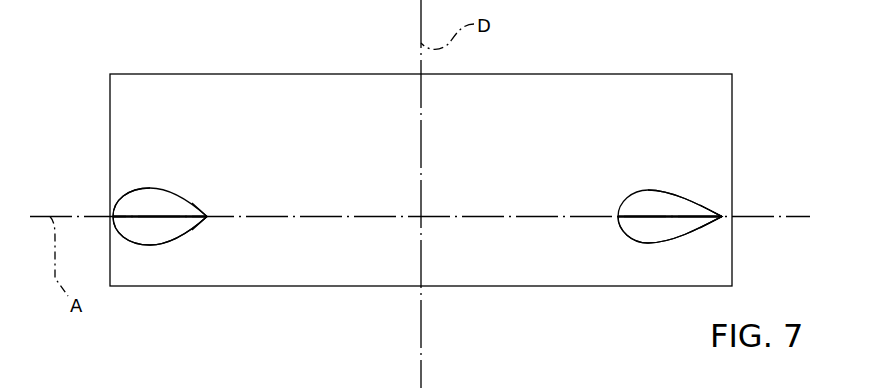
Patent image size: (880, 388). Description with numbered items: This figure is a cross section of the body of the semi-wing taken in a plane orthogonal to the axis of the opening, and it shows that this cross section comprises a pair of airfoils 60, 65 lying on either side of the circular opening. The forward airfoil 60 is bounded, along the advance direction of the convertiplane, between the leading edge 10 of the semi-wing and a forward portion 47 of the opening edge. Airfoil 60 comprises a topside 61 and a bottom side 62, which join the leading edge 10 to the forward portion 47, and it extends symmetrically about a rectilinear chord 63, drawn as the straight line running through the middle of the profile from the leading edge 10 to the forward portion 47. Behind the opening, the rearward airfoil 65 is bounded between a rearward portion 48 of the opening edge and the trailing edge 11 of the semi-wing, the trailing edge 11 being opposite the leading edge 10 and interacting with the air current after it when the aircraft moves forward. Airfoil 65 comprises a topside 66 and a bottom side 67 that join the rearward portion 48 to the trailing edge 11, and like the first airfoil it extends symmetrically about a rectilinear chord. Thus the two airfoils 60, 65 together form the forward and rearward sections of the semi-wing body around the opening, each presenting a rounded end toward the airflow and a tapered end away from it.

The leading edge 10 is at (113, 215).
The trailing edge 11 is at (723, 214).
The forward portion 47 is at (208, 217).
The rearward portion 48 is at (618, 217).
The airfoil 60 is at (137, 118).
The topside 61 is at (155, 188).
The bottom side 62 is at (158, 246).
The rectilinear chord 63 is at (170, 214).
The airfoil 65 is at (630, 189).
The topside 66 is at (683, 197).
The bottom side 67 is at (683, 236).